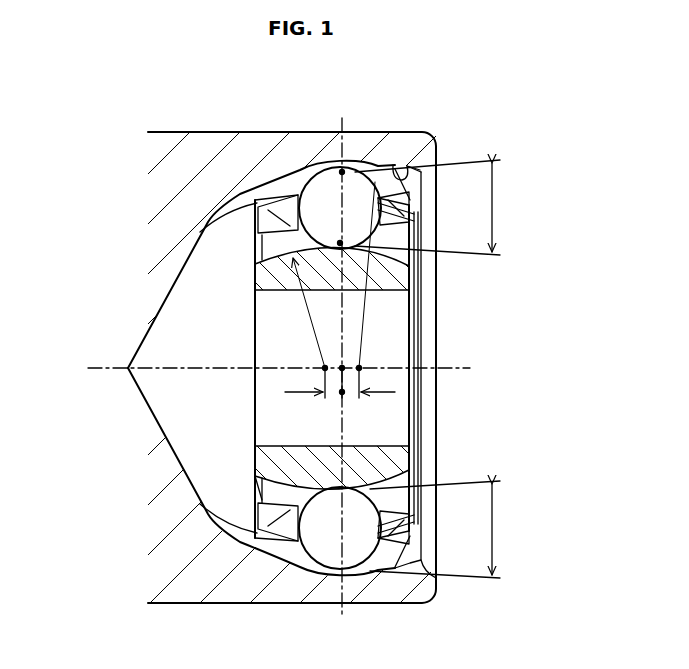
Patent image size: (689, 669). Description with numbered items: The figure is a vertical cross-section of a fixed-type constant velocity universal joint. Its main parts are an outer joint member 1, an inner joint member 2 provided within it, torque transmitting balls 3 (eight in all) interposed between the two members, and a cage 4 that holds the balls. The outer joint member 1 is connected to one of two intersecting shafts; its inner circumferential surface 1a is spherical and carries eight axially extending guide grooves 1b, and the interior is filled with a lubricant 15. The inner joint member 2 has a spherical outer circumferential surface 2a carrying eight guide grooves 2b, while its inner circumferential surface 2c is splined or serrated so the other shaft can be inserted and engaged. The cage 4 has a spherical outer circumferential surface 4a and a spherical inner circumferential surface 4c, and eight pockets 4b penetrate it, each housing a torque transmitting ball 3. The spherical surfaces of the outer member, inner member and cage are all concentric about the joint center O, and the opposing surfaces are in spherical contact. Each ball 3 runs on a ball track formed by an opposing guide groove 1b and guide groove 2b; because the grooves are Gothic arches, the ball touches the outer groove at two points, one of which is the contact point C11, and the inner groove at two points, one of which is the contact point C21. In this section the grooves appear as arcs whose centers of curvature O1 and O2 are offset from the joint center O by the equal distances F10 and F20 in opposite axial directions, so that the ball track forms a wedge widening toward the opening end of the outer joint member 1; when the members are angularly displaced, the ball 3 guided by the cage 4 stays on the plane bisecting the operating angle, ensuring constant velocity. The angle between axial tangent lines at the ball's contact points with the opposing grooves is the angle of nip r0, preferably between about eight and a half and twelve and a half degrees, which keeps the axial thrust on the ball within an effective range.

The outer joint member 1 is at (180, 130).
The inner circumferential surface 1a is at (250, 192).
The guide groove 1b is at (396, 176).
The lubricant 15 is at (268, 190).
The inner joint member 2 is at (412, 420).
The outer circumferential surface 2a is at (262, 540).
The guide groove 2b is at (255, 480).
The inner circumferential surface 2c is at (255, 445).
The torque transmitting ball 3 is at (304, 170).
The cage 4 is at (420, 200).
The outer circumferential surface 4a is at (296, 550).
The pocket 4b is at (285, 205).
The inner circumferential surface 4c is at (320, 490).
The contact point C11 is at (342, 170).
The contact point C21 is at (335, 245).
The joint center O is at (342, 366).
The center of curvature O1 is at (359, 366).
The center of curvature O2 is at (325, 366).
The offset distance F10 is at (377, 393).
The offset distance F20 is at (315, 393).
The angle of nip r0 is at (436, 369).